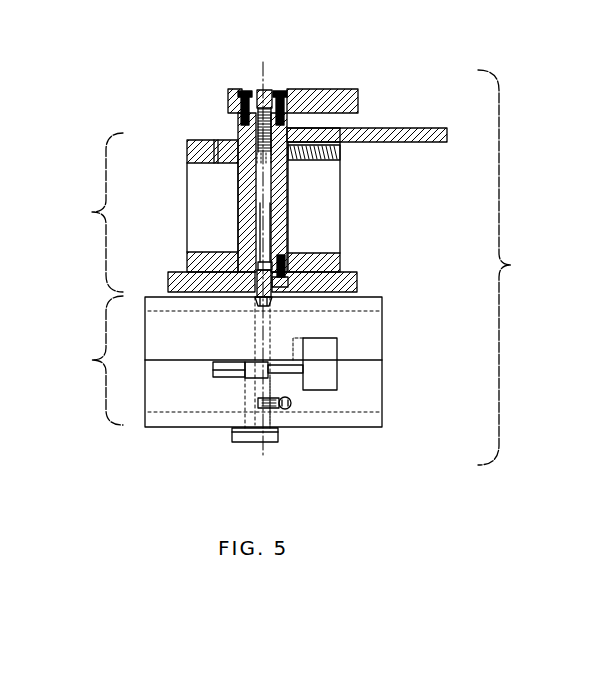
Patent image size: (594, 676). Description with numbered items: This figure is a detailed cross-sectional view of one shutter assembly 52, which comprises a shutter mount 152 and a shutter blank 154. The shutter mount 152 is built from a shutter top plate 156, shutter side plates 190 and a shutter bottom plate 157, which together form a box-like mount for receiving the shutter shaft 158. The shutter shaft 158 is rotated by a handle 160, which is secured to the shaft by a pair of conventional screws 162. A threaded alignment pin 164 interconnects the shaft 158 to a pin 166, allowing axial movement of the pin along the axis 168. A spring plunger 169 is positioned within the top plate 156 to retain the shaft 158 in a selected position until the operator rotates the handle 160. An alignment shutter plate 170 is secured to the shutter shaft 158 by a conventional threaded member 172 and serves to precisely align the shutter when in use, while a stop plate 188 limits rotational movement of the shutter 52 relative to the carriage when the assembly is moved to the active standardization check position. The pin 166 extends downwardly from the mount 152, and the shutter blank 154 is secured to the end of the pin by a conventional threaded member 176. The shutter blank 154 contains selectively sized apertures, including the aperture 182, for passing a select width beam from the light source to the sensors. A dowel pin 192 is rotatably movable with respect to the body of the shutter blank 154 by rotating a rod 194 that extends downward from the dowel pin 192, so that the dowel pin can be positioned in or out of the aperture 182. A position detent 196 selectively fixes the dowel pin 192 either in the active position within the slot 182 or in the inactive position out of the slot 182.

The shutter assembly 52 is at (515, 267).
The shutter mount 152 is at (79, 212).
The shutter blank 154 is at (209, 362).
The shutter top plate 156 is at (200, 140).
The shutter bottom plate 157 is at (185, 267).
The shutter shaft 158 is at (237, 202).
The handle 160 is at (345, 89).
The screws 162 is at (245, 90).
The threaded alignment pin 164 is at (272, 90).
The pin 166 is at (341, 170).
The axis 168 is at (263, 248).
The spring plunger 169 is at (350, 128).
The alignment shutter plate 170 is at (360, 283).
The threaded member 172 is at (287, 290).
The threaded member 176 is at (258, 307).
The aperture 182 is at (320, 390).
The stop plate 188 is at (424, 128).
The shutter side plates 190 is at (342, 233).
The dowel pin 192 is at (222, 377).
The rod 194 is at (240, 443).
The position detent 196 is at (290, 418).